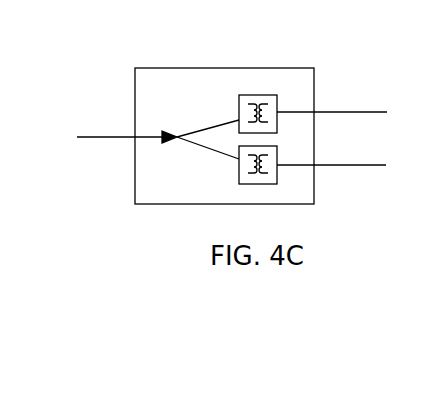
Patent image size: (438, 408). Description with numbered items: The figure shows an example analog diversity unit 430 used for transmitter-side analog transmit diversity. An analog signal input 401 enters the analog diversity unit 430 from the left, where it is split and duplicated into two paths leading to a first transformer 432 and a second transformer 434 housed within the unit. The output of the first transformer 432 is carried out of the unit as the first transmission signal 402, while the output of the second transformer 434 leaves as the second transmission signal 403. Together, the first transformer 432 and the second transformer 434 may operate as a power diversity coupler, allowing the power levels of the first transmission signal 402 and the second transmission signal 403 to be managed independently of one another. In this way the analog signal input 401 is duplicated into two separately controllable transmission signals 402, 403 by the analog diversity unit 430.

The analog signal input 401 is at (101, 136).
The first transmission signal 402 is at (356, 112).
The second transmission signal 403 is at (384, 165).
The analog diversity unit 430 is at (212, 68).
The first transformer 432 is at (264, 95).
The second transformer 434 is at (238, 166).